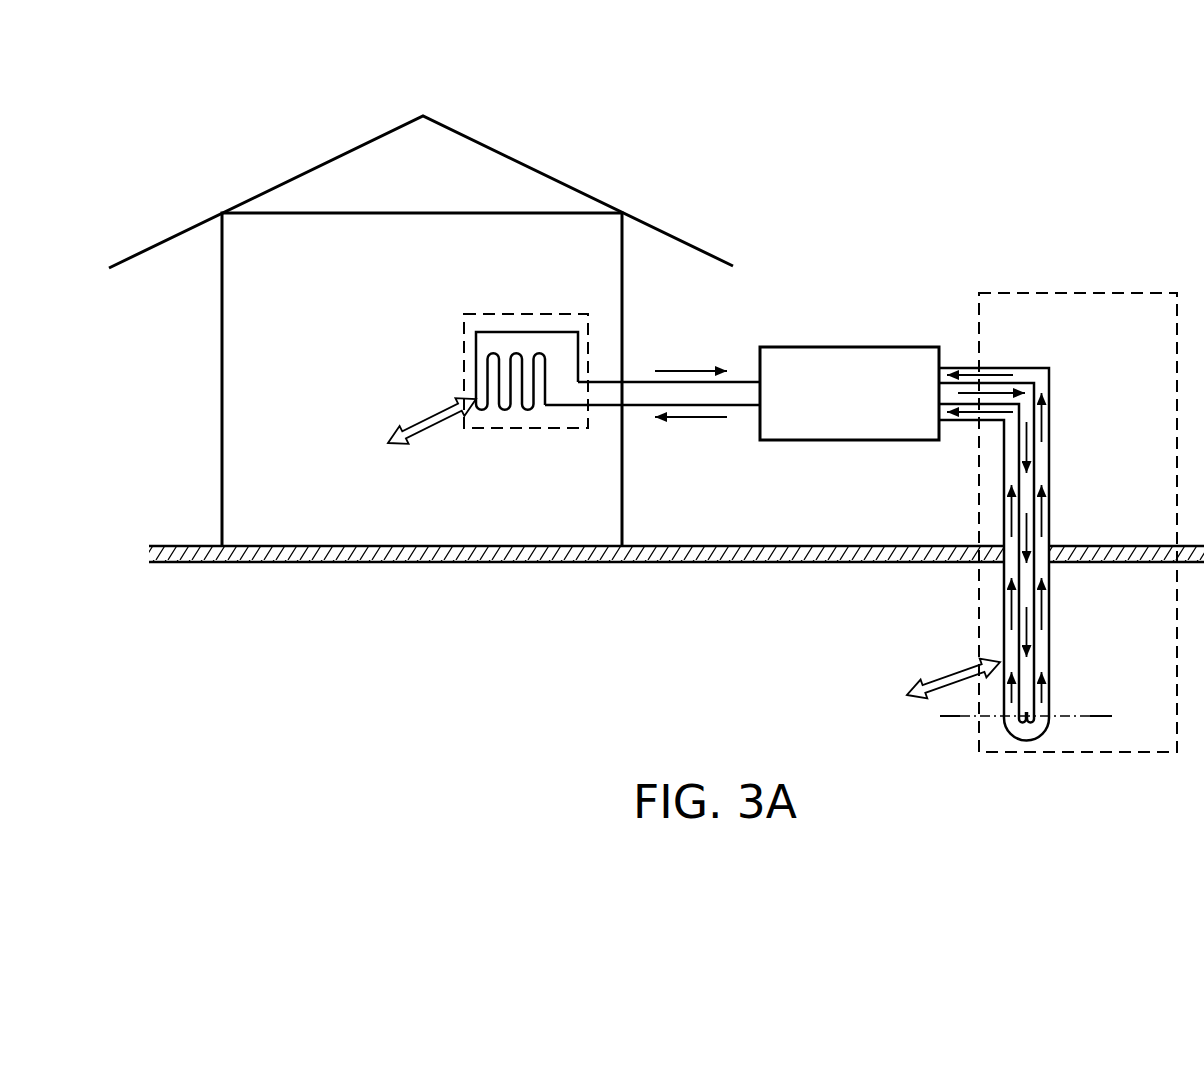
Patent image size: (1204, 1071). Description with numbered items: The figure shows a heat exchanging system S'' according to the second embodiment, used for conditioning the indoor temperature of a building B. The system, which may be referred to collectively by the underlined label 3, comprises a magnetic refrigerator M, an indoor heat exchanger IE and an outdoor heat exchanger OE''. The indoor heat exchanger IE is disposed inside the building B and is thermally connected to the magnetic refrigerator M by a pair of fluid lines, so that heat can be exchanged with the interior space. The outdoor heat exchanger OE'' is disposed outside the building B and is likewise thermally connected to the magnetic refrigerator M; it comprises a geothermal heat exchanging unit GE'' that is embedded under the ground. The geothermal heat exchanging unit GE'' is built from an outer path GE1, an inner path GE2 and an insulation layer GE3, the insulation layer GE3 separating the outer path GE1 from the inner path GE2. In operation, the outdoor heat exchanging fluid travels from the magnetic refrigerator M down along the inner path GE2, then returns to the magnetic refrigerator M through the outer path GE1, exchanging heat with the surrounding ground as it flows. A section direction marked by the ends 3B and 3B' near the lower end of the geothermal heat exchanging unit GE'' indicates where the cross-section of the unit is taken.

The geothermal heat pump system 3 is at (154, 684).
The building B is at (283, 162).
The indoor heat exchanger IE is at (526, 312).
The heat exchanging system S'' is at (785, 327).
The magnetic refrigerator M is at (851, 443).
The outdoor heat exchanger OE'' is at (1078, 489).
The geothermal heat exchanging unit GE'' is at (1018, 554).
The outer path GE1 is at (1004, 641).
The inner path GE2 is at (1030, 635).
The insulation layer GE3 is at (1045, 568).
The section direction 3B is at (1011, 763).
The section direction 3B' is at (1106, 763).